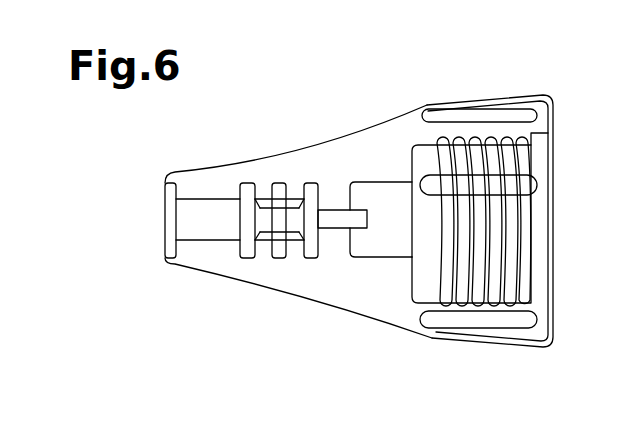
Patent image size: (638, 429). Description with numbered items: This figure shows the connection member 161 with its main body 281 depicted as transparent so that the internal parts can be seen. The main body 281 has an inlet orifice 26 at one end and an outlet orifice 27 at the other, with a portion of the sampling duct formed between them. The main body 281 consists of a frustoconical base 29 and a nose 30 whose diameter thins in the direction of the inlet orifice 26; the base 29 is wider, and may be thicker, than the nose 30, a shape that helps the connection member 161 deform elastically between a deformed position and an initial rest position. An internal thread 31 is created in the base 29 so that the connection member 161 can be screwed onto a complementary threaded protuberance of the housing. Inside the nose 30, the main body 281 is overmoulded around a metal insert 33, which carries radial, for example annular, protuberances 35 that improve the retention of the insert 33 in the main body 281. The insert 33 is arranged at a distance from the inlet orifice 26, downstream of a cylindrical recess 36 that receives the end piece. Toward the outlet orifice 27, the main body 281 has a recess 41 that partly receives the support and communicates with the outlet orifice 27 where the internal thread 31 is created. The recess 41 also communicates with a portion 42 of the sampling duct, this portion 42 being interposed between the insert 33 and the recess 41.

The connection member 161 is at (384, 177).
The frustoconical base 29 is at (492, 122).
The main body 281 is at (280, 163).
The portion of the sampling duct 42 is at (337, 210).
The recess 41 is at (383, 190).
The radial protuberances 35 is at (248, 182).
The inlet orifice 26 is at (170, 225).
The cylindrical recess 36 is at (190, 240).
The nose 30 is at (216, 288).
The metal insert 33 is at (295, 237).
The outlet orifice 27 is at (553, 233).
The internal thread 31 is at (478, 290).